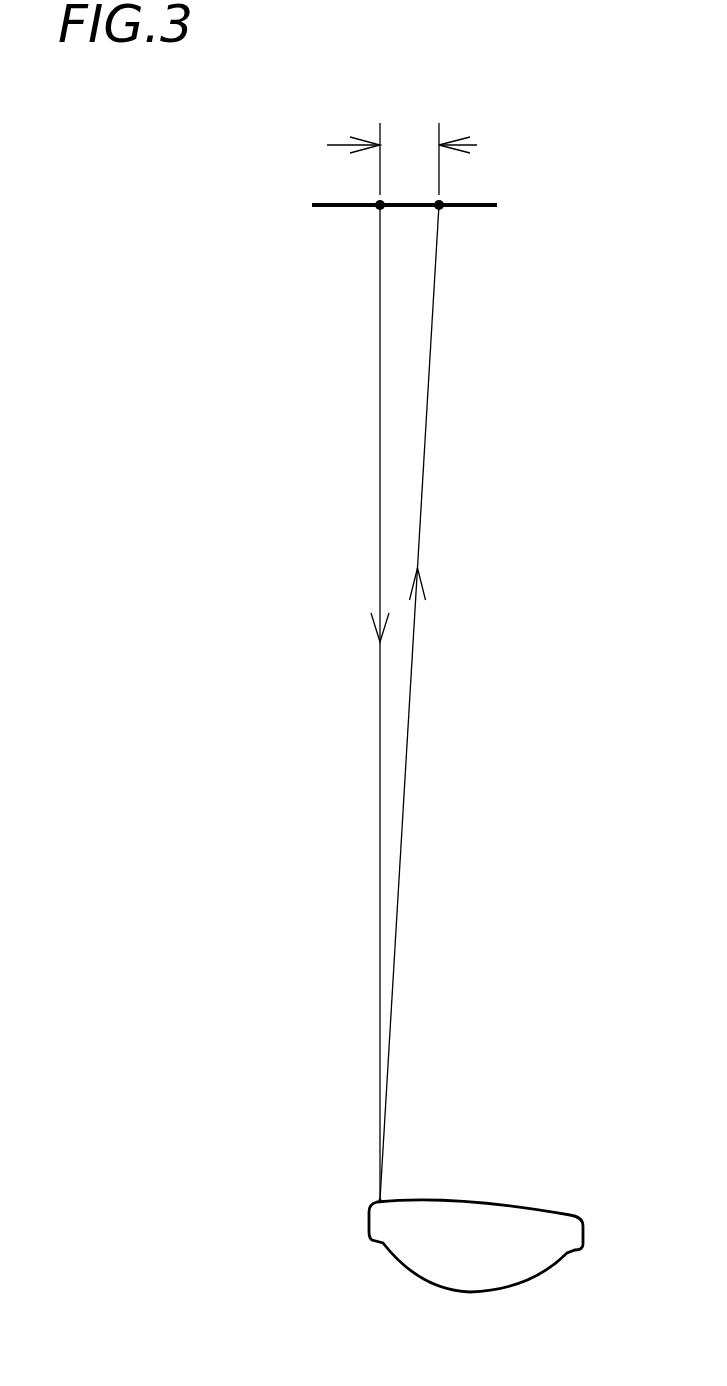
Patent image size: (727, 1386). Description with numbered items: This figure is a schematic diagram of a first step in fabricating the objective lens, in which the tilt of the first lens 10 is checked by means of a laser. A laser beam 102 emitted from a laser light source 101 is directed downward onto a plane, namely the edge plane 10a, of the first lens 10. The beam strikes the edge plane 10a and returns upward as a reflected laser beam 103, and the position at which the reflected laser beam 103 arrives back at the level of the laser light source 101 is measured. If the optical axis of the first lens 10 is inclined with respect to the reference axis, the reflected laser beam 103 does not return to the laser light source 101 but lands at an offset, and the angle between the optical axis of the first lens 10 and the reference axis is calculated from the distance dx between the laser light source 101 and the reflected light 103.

The first lens 10 is at (505, 1272).
The plane (edge plane) 10a is at (380, 1200).
The laser light source 101 is at (380, 208).
The laser beam 102 is at (352, 702).
The reflected laser beam 103 is at (433, 702).
The distance dx is at (420, 152).